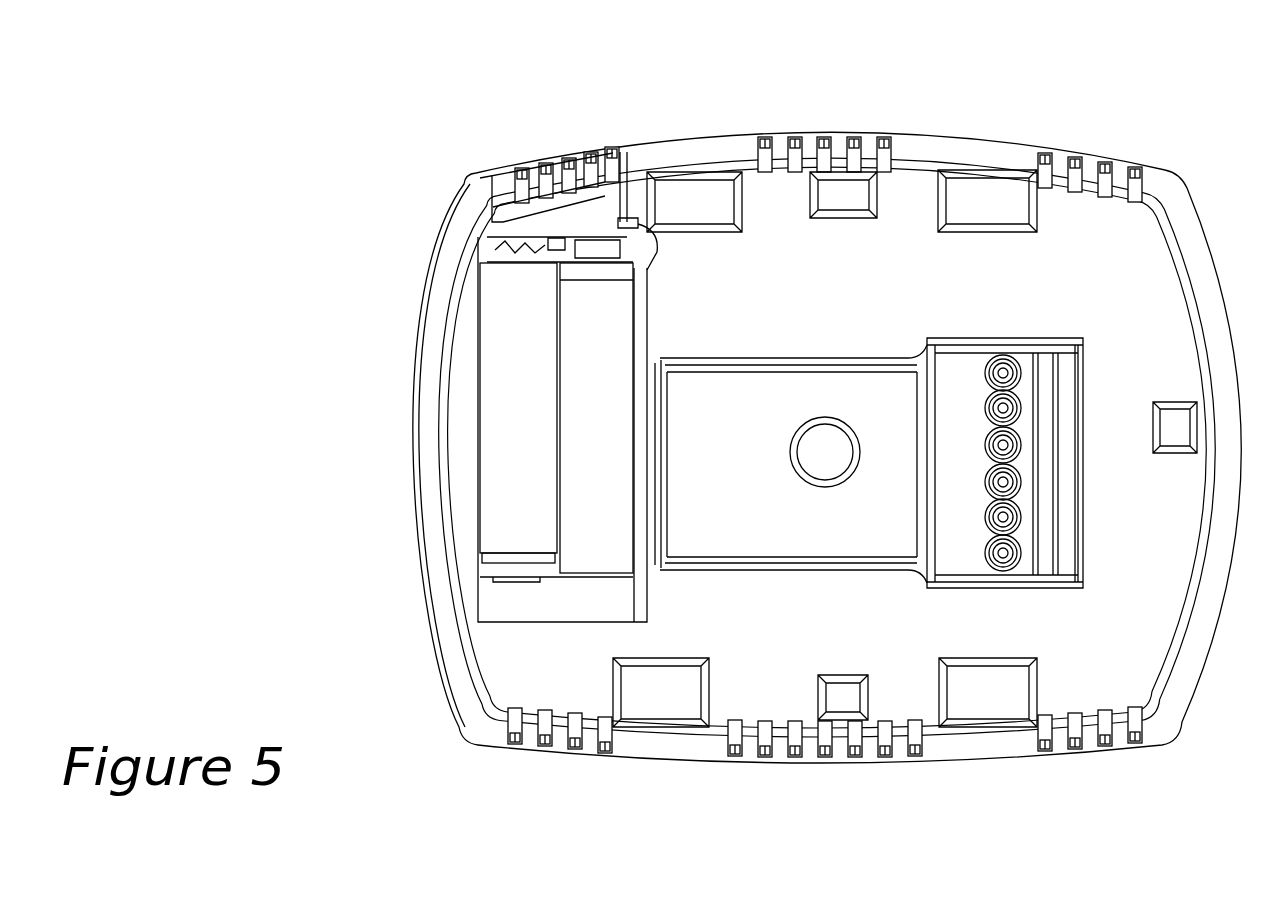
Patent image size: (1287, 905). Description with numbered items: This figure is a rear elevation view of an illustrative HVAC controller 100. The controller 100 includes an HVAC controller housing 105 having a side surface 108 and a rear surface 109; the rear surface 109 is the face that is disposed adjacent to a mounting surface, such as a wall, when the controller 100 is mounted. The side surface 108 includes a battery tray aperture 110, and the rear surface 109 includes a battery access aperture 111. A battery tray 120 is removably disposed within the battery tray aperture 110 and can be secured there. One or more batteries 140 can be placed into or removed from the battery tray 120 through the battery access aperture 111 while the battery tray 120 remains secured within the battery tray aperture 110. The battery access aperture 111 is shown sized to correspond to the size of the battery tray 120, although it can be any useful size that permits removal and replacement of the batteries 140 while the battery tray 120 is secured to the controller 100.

The HVAC controller 100 is at (1127, 128).
The HVAC controller housing 105 is at (785, 115).
The side surface 108 is at (661, 138).
The rear surface 109 is at (852, 306).
The battery tray aperture 110 is at (477, 621).
The battery access aperture 111 is at (640, 624).
The battery tray 120 is at (424, 456).
The batteries 140 is at (593, 345).